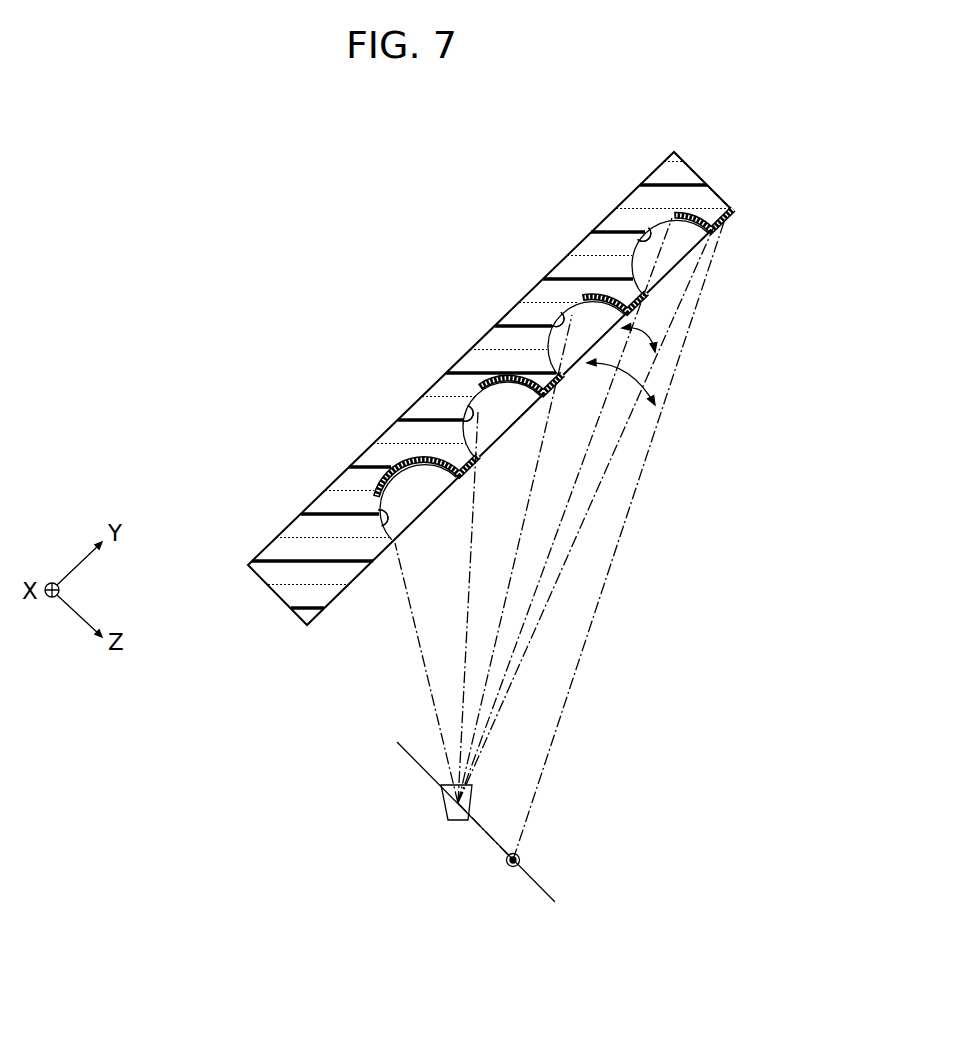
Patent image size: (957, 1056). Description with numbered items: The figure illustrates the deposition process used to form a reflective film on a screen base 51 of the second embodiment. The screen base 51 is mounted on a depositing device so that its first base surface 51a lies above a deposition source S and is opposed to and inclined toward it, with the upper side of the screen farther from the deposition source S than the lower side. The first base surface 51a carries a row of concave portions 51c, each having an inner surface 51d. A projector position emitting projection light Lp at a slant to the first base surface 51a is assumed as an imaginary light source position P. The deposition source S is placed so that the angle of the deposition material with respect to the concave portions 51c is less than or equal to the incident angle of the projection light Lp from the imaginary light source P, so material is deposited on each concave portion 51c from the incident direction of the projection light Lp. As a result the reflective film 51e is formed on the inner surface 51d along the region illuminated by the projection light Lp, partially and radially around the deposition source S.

The screen base 51 is at (703, 180).
The first base surface 51a is at (733, 222).
The concave portion 51c is at (648, 238).
The inner surface 51d is at (514, 377).
The reflective film 51e is at (674, 212).
The projection light Lp is at (592, 622).
The deposition source S is at (441, 806).
The imaginary light source position P is at (521, 858).